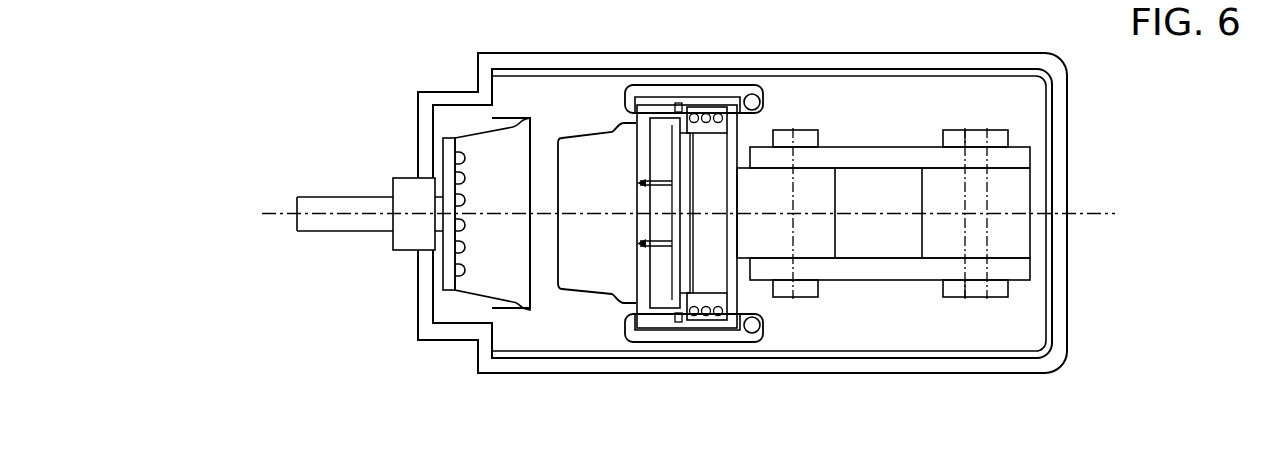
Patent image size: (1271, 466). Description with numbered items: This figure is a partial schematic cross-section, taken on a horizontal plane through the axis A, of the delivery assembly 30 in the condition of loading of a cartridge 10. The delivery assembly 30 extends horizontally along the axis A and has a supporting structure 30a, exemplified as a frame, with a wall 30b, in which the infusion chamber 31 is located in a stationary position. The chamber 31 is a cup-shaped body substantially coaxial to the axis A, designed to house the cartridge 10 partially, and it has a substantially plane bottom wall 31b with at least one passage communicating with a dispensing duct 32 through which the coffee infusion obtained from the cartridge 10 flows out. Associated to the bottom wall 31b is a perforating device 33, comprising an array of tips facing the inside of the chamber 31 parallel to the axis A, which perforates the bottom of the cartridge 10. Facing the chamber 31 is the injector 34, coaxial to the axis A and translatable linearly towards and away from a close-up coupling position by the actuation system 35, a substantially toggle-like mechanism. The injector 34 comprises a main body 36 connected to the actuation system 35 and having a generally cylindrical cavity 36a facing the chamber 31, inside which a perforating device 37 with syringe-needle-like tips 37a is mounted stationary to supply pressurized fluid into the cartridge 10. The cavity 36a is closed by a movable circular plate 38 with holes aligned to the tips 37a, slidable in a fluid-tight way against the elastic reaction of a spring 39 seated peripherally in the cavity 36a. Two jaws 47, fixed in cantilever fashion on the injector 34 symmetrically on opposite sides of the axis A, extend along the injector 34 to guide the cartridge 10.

The cartridge 10 is at (557, 194).
The delivery assembly 30 is at (710, 207).
The supporting structure 30a is at (1053, 363).
The inner housing wall 30b is at (952, 78).
The infusion chamber 31 is at (510, 112).
The bottom wall 31b is at (440, 273).
The dispensing duct 32 is at (362, 232).
The perforating device 33 is at (469, 165).
The injector device 34 is at (749, 288).
The actuation system 35 is at (862, 127).
The main body 36 is at (836, 190).
The cavity 36a is at (728, 127).
The perforating device 37 is at (666, 271).
The tips 37a is at (663, 180).
The movable circular plate 38 is at (633, 233).
The spring 39 is at (700, 108).
The jaws 47 is at (610, 97).
The axis A is at (1102, 215).